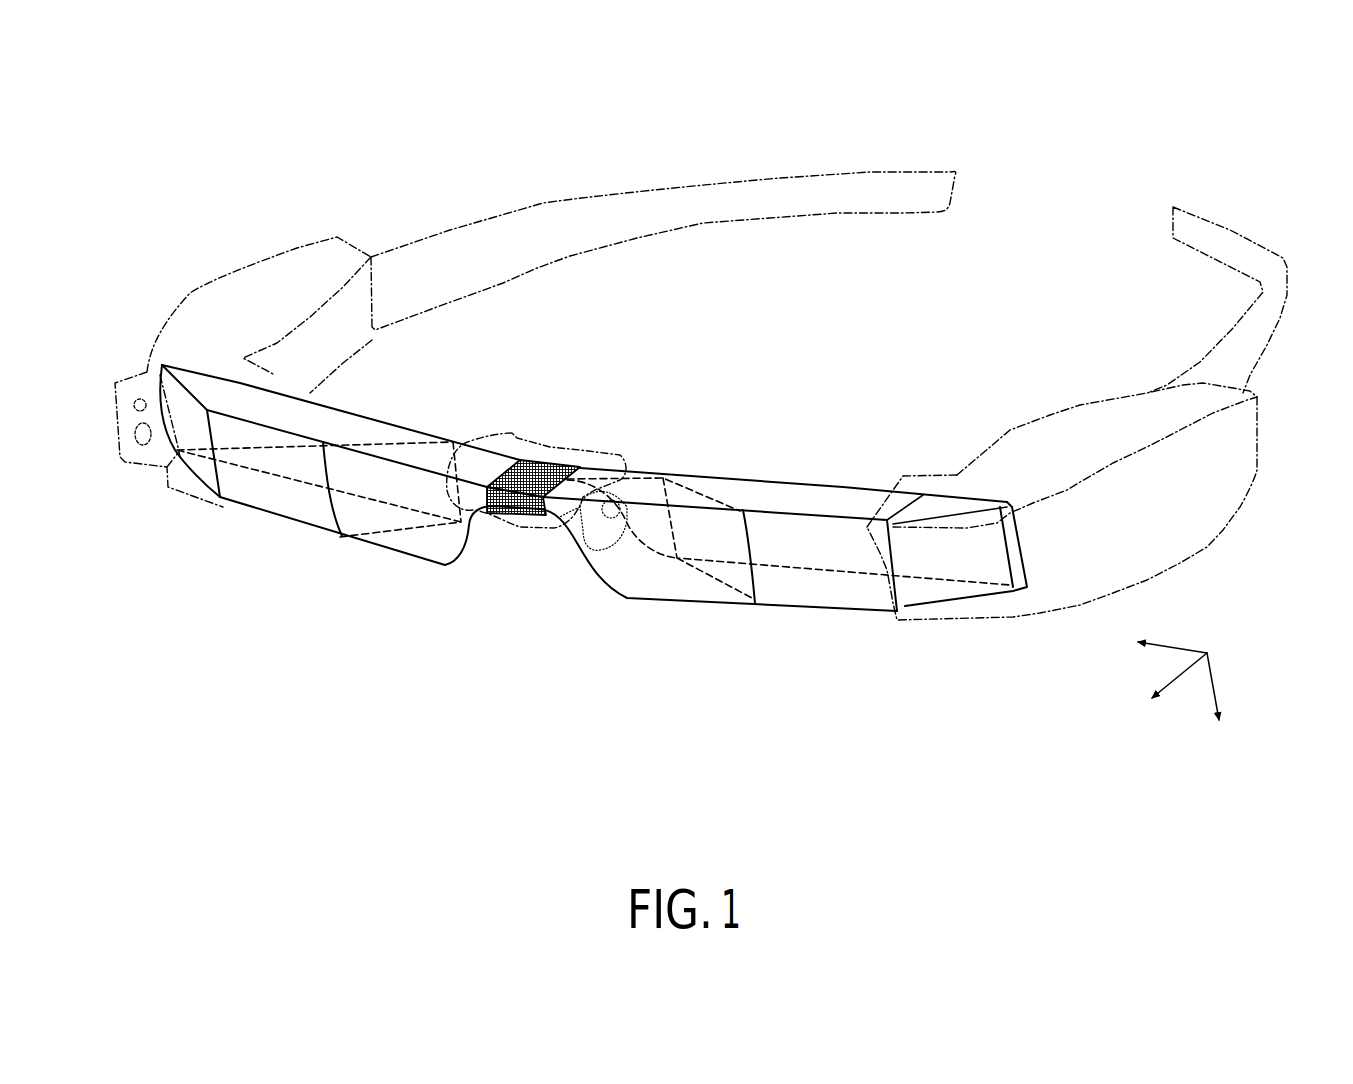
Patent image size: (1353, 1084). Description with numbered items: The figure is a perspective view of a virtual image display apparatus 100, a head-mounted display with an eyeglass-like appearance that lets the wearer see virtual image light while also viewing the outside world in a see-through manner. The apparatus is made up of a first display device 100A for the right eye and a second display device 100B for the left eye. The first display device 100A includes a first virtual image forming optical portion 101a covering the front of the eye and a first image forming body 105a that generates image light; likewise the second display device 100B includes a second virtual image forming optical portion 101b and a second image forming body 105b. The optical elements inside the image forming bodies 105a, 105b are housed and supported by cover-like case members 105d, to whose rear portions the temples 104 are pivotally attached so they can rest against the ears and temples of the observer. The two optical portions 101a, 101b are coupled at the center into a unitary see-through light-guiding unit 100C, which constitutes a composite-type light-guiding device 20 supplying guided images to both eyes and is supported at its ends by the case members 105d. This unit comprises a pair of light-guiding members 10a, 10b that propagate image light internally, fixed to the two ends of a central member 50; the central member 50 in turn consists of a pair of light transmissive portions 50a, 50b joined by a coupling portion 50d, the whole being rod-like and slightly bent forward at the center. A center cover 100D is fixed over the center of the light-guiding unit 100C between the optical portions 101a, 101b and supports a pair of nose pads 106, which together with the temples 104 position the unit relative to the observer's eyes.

The virtual image display apparatus 100 is at (1207, 91).
The first display device 100A is at (285, 570).
The second display device 100B is at (786, 664).
The see-through light-guiding unit 100C is at (669, 446).
The light-guiding device 20 is at (718, 560).
The center cover 100D is at (512, 433).
The light-guiding member 10a is at (261, 485).
The light-guiding member 10b is at (803, 583).
The first virtual image forming optical portion 101a is at (330, 520).
The second virtual image forming optical portion 101b is at (739, 582).
The central member 50 is at (582, 467).
The light transmissive portion 50a is at (420, 540).
The light transmissive portion 50b is at (667, 578).
The coupling portion 50d is at (540, 460).
The temple 104 is at (541, 204).
The first image forming body 105a is at (183, 328).
The second image forming body 105b is at (1033, 455).
The case member 105d is at (233, 268).
The nose pad 106 is at (498, 513).